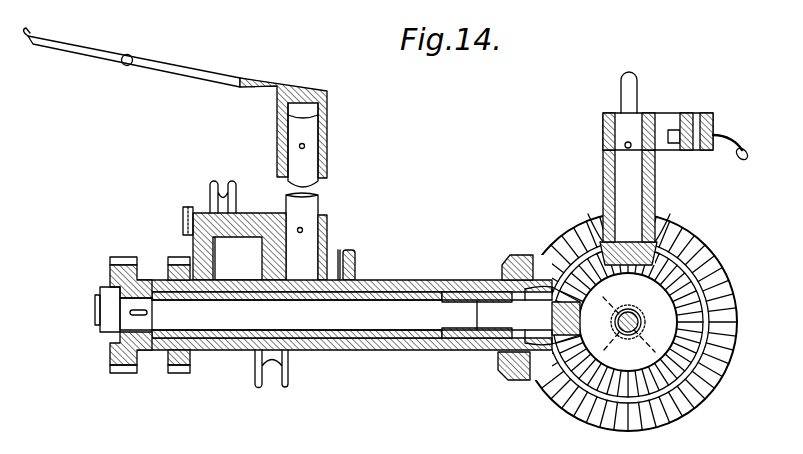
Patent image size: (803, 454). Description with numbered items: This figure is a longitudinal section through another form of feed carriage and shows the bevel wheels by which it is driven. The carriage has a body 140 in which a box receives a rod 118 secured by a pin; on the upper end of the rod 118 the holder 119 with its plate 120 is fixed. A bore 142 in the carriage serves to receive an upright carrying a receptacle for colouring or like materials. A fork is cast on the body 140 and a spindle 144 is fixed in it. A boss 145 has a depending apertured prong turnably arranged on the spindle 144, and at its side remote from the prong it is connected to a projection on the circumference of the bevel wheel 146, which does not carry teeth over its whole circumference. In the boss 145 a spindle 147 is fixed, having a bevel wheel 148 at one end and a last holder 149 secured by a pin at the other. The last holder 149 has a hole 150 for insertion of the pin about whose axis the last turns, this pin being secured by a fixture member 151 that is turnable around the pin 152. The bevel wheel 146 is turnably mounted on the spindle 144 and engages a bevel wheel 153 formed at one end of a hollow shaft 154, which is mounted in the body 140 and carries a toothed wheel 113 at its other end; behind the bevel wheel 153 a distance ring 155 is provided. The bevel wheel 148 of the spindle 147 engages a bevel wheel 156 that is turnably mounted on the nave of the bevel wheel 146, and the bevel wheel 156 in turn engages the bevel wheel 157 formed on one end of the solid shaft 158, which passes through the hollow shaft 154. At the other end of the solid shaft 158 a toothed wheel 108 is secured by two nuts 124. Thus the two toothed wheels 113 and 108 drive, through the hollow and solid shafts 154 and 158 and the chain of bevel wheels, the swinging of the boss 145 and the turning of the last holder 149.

The toothed wheel 108 is at (124, 262).
The toothed wheel 113 is at (177, 258).
The rod 118 is at (305, 208).
The holder 119 is at (327, 143).
The plate 120 is at (97, 46).
The nuts 124 is at (103, 327).
The body 140 is at (356, 262).
The bore 142 is at (372, 236).
The spindle 144 is at (634, 331).
The boss 145 is at (655, 191).
The bevel wheel 146 is at (700, 251).
The spindle 147 is at (618, 184).
The bevel wheel 148 is at (572, 233).
The last holder 149 is at (603, 131).
The hole 150 is at (663, 125).
The fixture member 151 is at (741, 150).
The pin 152 is at (698, 121).
The bevel wheel 153 is at (532, 257).
The hollow shaft 154 is at (460, 294).
The distance ring 155 is at (505, 270).
The bevel wheel 156 is at (683, 283).
The bevel wheel 157 is at (619, 313).
The solid shaft 158 is at (493, 326).